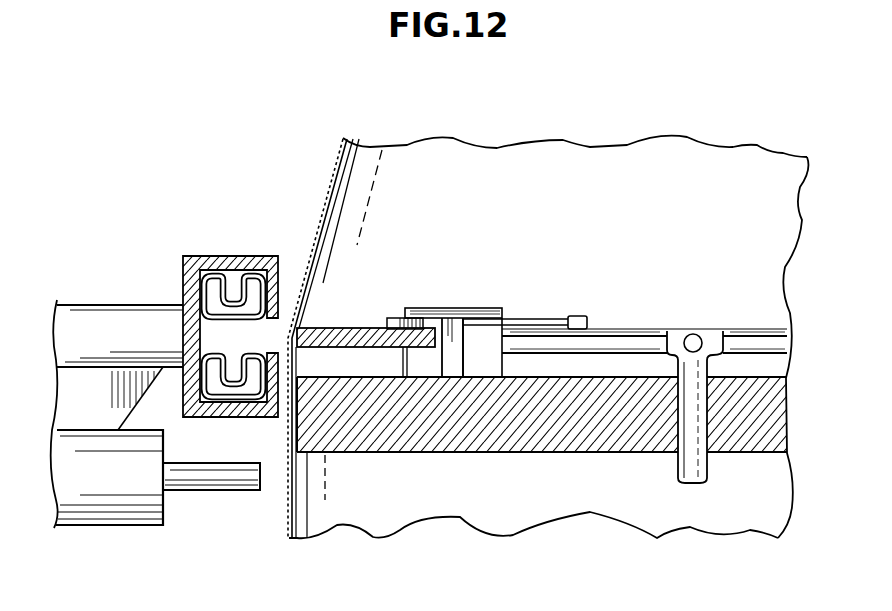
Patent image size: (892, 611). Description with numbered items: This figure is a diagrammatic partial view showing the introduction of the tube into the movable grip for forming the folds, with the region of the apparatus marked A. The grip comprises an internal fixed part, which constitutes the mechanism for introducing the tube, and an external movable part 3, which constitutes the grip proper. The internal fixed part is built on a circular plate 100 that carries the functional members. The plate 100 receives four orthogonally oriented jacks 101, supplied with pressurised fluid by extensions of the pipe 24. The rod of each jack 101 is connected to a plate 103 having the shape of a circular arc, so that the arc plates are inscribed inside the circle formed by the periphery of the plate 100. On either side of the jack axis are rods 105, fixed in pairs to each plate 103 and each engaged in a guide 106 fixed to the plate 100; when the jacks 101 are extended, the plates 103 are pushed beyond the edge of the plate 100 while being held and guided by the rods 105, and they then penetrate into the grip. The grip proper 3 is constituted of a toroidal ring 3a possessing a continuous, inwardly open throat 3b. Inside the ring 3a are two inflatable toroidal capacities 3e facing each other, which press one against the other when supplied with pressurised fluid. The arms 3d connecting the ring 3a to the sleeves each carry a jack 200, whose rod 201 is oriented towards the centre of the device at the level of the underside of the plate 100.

The apparatus body A is at (602, 157).
The external movable part 3 is at (233, 252).
The toroidal ring 3a is at (186, 266).
The throat 3b is at (269, 337).
The arms 3d is at (75, 313).
The inflatable toroidal capacities 3e is at (200, 292).
The pipe 24 is at (707, 470).
The circular plate 100 is at (618, 438).
The jacks 101 is at (497, 308).
The plate 103 is at (352, 328).
The rods 105 is at (548, 319).
The guide 106 is at (452, 318).
The jack 200 is at (108, 510).
The rod 201 is at (214, 478).